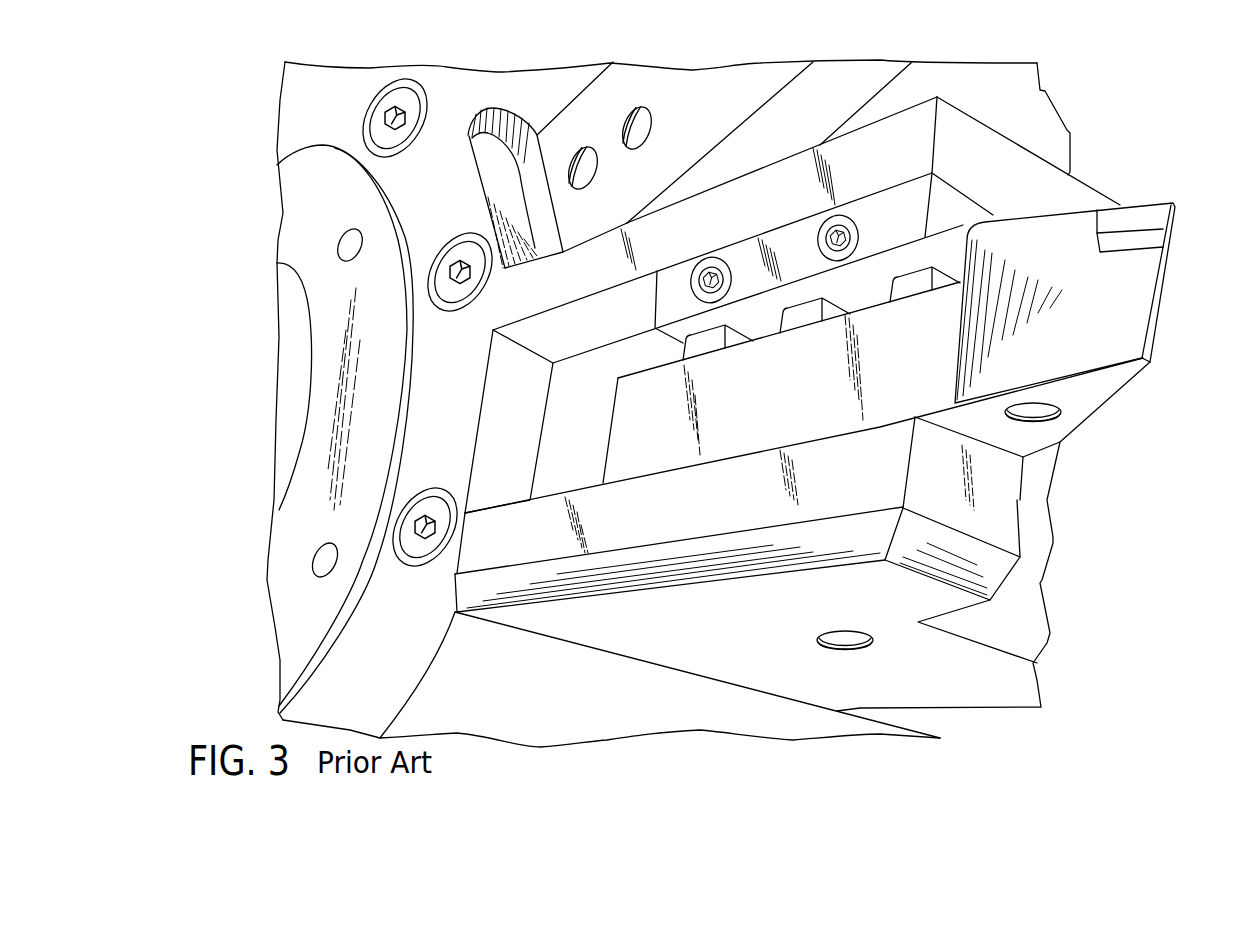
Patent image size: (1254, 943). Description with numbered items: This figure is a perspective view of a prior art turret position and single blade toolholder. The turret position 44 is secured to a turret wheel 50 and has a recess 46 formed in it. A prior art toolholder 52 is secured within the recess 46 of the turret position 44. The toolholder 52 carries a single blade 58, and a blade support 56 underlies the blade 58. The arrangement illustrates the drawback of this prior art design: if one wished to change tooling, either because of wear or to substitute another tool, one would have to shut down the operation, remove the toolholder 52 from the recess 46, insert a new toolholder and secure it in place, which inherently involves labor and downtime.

The turret position 44 is at (587, 580).
The recess 46 is at (573, 413).
The turret wheel 50 is at (340, 410).
The toolholder 52 is at (740, 417).
The blade support 56 is at (1160, 238).
The blade 58 is at (1133, 213).